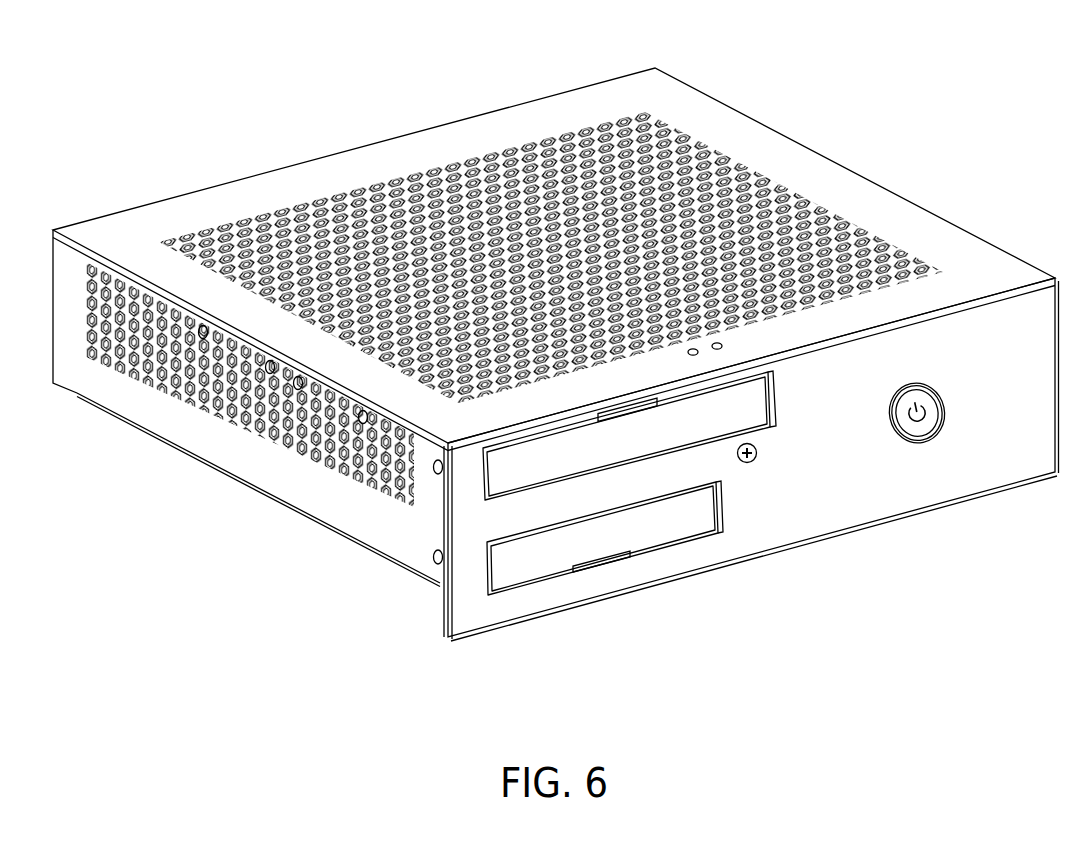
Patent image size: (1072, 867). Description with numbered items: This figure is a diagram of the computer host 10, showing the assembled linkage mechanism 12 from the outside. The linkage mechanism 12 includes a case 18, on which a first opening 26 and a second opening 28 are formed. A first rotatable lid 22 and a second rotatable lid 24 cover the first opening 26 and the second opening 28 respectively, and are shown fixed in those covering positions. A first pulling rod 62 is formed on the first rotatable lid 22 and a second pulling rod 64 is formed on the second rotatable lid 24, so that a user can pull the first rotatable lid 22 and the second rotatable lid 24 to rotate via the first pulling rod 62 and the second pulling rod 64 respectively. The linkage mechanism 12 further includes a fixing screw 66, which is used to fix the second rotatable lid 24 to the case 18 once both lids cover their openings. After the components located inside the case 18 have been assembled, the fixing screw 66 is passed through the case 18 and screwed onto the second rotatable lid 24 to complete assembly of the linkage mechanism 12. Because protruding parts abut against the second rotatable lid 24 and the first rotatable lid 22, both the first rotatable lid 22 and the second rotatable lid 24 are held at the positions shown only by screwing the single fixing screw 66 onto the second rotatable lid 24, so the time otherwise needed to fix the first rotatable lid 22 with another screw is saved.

The computer host 10 is at (946, 68).
The linkage mechanism 12 is at (378, 688).
The case 18 is at (412, 543).
The first rotatable lid 22 is at (515, 567).
The second rotatable lid 24 is at (637, 450).
The first opening 26 is at (720, 495).
The second opening 28 is at (777, 417).
The first pulling rod 62 is at (603, 566).
The second pulling rod 64 is at (648, 408).
The fixing screw 66 is at (755, 462).